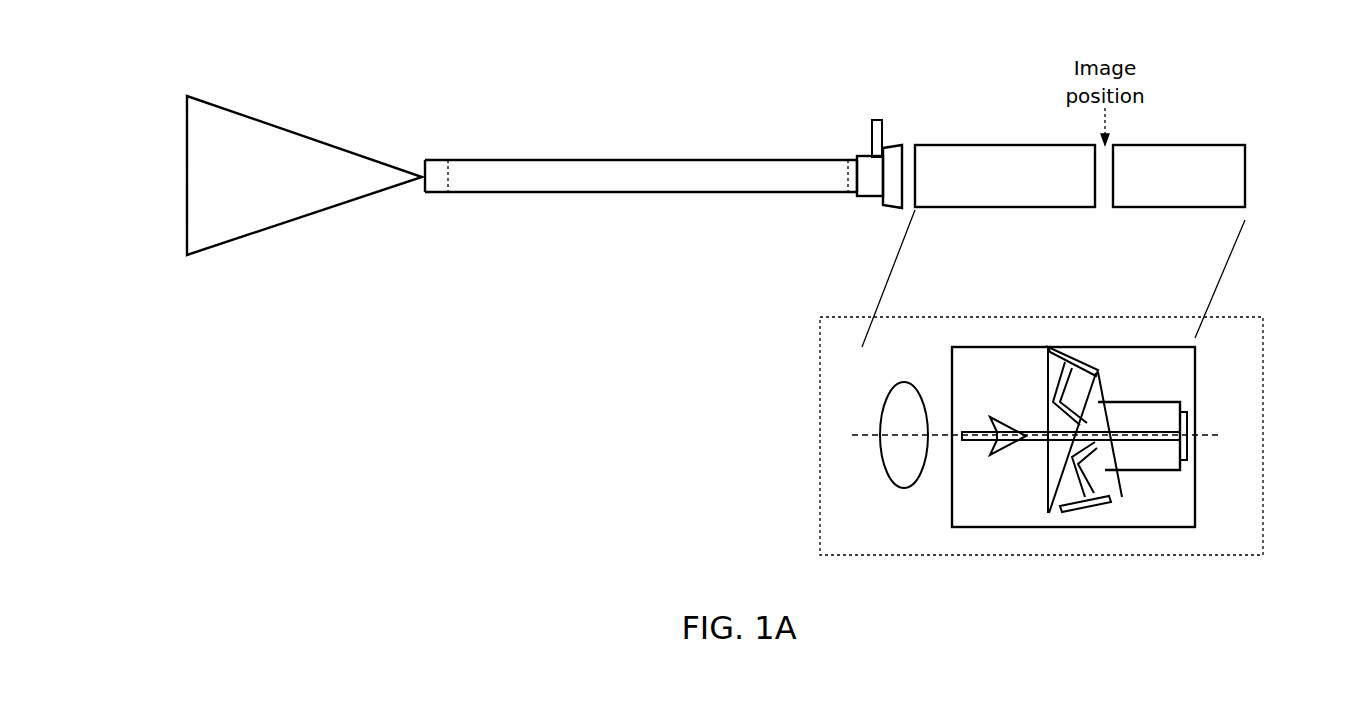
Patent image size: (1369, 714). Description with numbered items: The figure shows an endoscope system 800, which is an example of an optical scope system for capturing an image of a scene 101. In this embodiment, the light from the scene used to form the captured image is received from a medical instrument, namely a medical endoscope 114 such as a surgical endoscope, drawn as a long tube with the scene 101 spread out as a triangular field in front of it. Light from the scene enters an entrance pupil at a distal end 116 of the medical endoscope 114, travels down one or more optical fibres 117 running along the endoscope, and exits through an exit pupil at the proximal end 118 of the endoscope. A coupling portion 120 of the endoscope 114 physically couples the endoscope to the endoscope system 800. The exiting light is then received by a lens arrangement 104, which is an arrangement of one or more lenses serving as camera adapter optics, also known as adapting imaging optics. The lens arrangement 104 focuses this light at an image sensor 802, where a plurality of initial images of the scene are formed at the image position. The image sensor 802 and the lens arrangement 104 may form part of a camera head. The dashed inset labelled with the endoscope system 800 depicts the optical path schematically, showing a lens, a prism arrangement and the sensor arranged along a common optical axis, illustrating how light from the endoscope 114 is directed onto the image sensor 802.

The scene 101 is at (114, 190).
The distal end 116 is at (421, 183).
The medical endoscope 114 is at (658, 193).
The optical fibres 117 is at (523, 175).
The proximal end 118 is at (860, 194).
The coupling portion 120 is at (893, 147).
The lens arrangement 104 is at (1008, 143).
The image sensor 802 is at (1185, 143).
The endoscope system 800 is at (1264, 371).